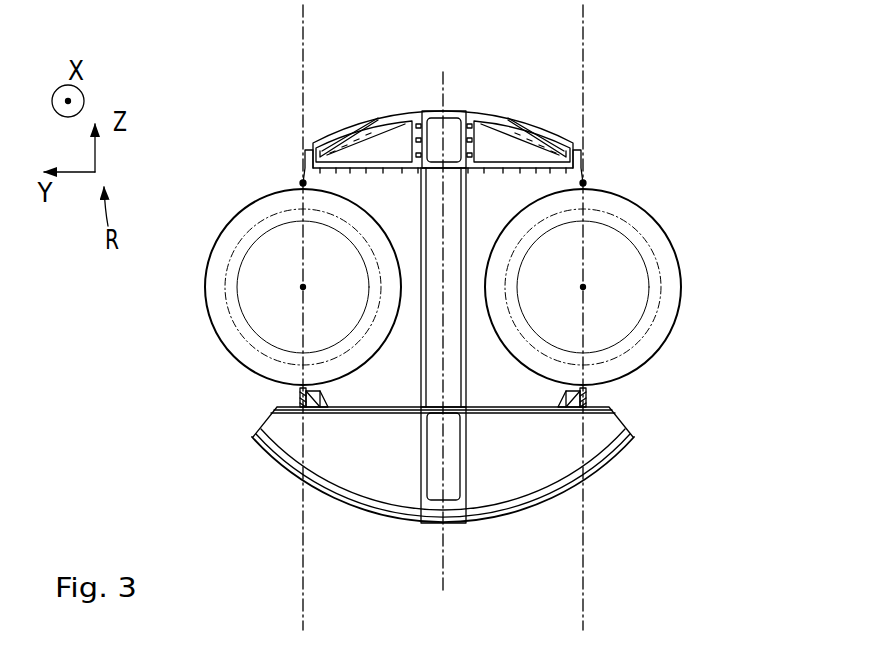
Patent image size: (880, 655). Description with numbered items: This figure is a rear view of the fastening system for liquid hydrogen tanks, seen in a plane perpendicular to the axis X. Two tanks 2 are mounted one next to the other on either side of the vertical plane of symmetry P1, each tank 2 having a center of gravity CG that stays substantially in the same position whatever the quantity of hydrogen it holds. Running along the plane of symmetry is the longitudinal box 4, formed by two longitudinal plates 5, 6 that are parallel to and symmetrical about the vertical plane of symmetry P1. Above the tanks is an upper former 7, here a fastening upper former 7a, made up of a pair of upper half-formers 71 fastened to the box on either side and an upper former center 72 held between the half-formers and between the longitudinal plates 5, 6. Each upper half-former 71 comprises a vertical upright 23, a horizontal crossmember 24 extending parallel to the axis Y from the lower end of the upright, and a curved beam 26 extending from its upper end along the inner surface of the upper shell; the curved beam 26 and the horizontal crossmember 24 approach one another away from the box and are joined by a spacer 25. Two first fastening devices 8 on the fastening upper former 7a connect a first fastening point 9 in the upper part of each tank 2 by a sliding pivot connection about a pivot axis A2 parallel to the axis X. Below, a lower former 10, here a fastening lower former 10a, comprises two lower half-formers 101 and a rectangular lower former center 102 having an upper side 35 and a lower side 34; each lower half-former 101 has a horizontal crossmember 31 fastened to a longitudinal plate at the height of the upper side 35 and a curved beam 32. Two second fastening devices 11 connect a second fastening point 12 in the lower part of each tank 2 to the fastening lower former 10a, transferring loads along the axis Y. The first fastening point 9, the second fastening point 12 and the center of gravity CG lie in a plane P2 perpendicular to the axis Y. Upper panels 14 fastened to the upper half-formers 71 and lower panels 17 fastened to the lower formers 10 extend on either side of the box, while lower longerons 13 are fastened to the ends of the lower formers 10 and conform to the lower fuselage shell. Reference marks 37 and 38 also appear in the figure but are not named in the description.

The tank 2 is at (206, 290).
The longitudinal box 4 is at (450, 95).
The longitudinal plate 5 is at (366, 157).
The longitudinal plate 6 is at (590, 105).
The upper former 7 is at (530, 104).
The fastening upper former 7a is at (607, 134).
The first fastening device 8 is at (302, 180).
The first fastening point 9 is at (300, 180).
The lower former 10 is at (299, 499).
The fastening lower former 10a is at (270, 452).
The second fastening device 11 is at (271, 398).
The second fastening point 12 is at (299, 390).
The lower longeron 13 is at (262, 422).
The upper panel 14 is at (360, 172).
The lower panel 17 is at (380, 407).
The vertical upright 23 is at (380, 172).
The horizontal crossmember 24 is at (335, 123).
The spacer 25 is at (303, 178).
The curved beam 26 is at (395, 195).
The horizontal crossmember 31 is at (367, 414).
The curved beam 32 is at (337, 500).
The lower side 34 is at (457, 523).
The upper side 35 is at (437, 407).
The pivot point 37 is at (300, 183).
The arc inner flange 38 is at (273, 463).
The upper half-former 71 is at (306, 166).
The upper former center 72 is at (421, 111).
The lower half-former 101 is at (355, 503).
The lower former center 102 is at (432, 523).
The pivot axis A2 is at (300, 186).
The center of gravity CG is at (303, 287).
The vertical plane of symmetry P1 is at (445, 552).
The plane P2 is at (302, 572).